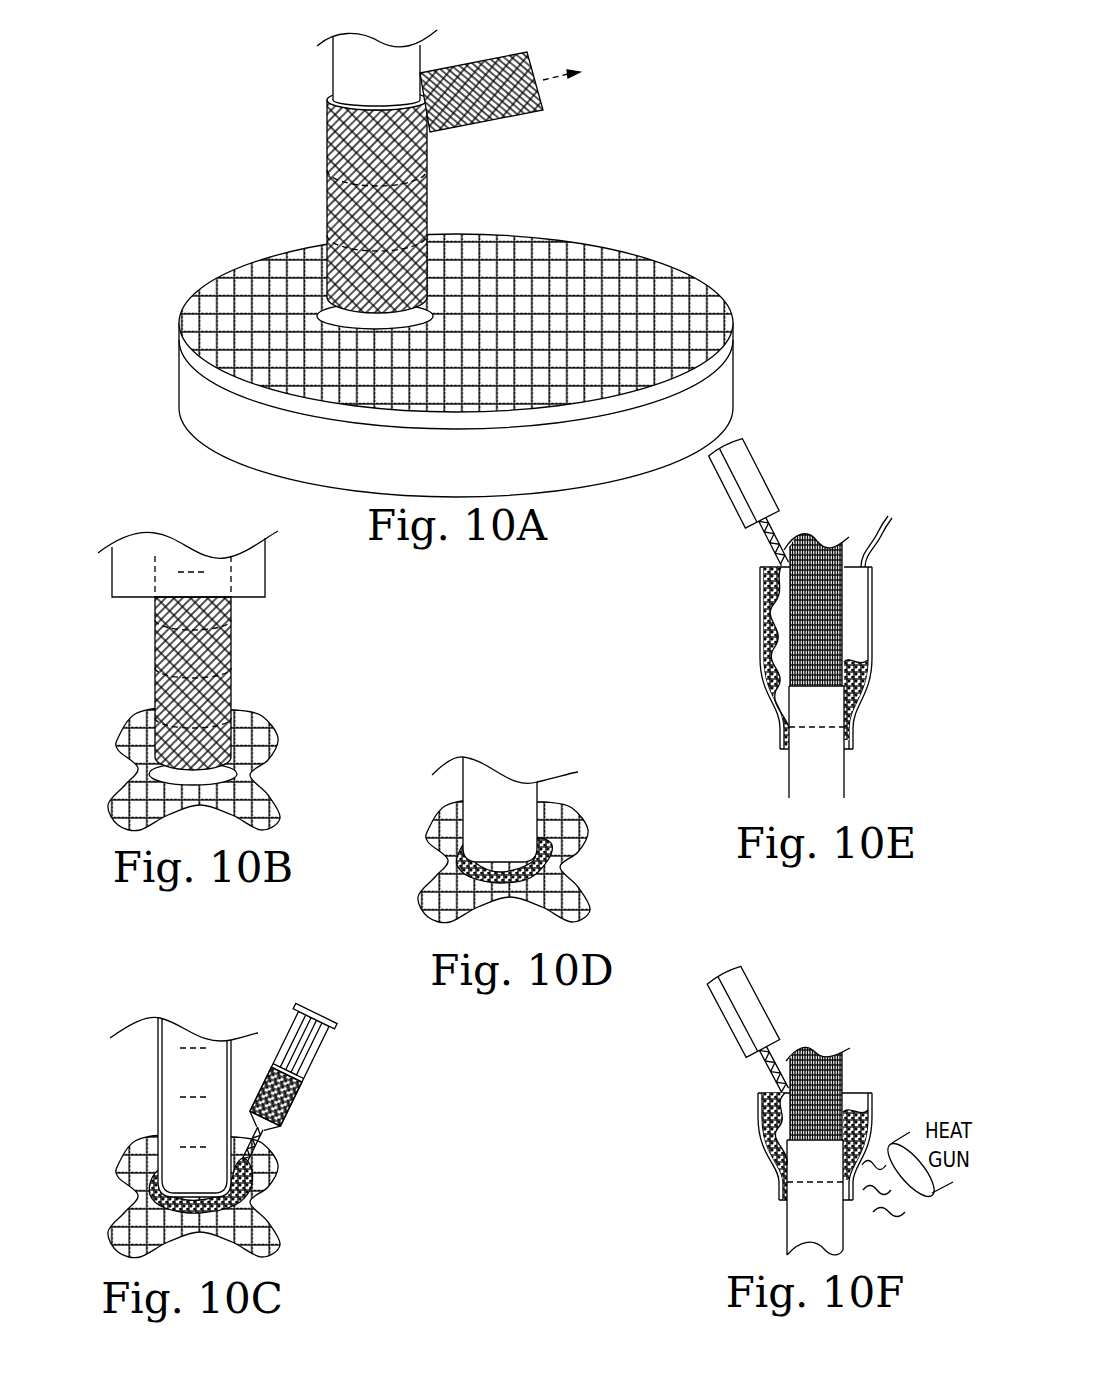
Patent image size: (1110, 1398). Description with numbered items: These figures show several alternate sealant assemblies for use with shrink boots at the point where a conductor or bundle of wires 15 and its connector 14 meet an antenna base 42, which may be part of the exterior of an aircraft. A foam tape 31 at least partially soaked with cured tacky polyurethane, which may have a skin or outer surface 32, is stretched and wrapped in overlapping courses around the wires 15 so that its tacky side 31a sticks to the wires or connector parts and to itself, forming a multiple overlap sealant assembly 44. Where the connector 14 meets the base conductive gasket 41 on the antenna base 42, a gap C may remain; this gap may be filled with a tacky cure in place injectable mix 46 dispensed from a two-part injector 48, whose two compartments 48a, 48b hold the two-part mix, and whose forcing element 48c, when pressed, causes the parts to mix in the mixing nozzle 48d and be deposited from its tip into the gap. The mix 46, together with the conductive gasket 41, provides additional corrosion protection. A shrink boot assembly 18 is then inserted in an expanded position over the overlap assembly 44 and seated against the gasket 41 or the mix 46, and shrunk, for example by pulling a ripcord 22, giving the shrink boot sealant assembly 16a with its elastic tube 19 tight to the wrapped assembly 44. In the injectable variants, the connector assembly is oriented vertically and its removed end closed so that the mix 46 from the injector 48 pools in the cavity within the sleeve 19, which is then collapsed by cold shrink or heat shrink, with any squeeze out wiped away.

In FIG. 10A, the connector 14 is at (428, 298).
In FIG. 10A, the conductor or bundle of wires 15 is at (333, 72).
In FIG. 10B, the conductor or bundle of wires 15 is at (172, 553).
In FIG. 10E, the conductor or bundle of wires 15 is at (843, 547).
In FIG. 10F, the conductor or bundle of wires 15 is at (843, 1070).
In FIG. 10D, the shrink boot sealant assembly 16a is at (565, 793).
In FIG. 10B, the shrink boot assembly 18 is at (110, 572).
In FIG. 10E, the shrink boot assembly 18 is at (883, 650).
In FIG. 10F, the shrink boot assembly 18 is at (878, 1115).
In FIG. 10C, the elastic tube 19 is at (158, 1060).
In FIG. 10D, the elastic tube 19 is at (483, 792).
In FIG. 10E, the elastic tube 19 is at (873, 605).
In FIG. 10F, the elastic tube 19 is at (758, 1113).
In FIG. 10E, the ripcord 22 is at (893, 525).
In FIG. 10A, the foam tape 31 is at (525, 135).
In FIG. 10B, the foam tape 31 is at (132, 689).
In FIG. 10A, the tacky side of tape 31a is at (460, 127).
In FIG. 10A, the skin or outer surface 32 is at (325, 110).
In FIG. 10A, the base conductive gasket 41 is at (652, 256).
In FIG. 10D, the base conductive gasket 41 is at (582, 905).
In FIG. 10A, the antenna base 42 is at (733, 382).
In FIG. 10A, the multiple overlap sealant assembly 44 is at (327, 253).
In FIG. 10B, the multiple overlap sealant assembly 44 is at (232, 685).
In FIG. 10C, the cure in place injectable mix 46 is at (253, 1182).
In FIG. 10D, the cure in place injectable mix 46 is at (540, 865).
In FIG. 10E, the cure in place injectable mix 46 is at (779, 677).
In FIG. 10F, the cure in place injectable mix 46 is at (777, 1133).
In FIG. 10C, the two-part injector 48 is at (311, 1068).
In FIG. 10E, the two-part injector 48 is at (774, 486).
In FIG. 10F, the two-part injector 48 is at (772, 1010).
In FIG. 10C, the compartment 48a is at (287, 1073).
In FIG. 10C, the compartment 48b is at (301, 1045).
In FIG. 10C, the forcing element 48c is at (315, 1016).
In FIG. 10C, the mixing nozzle 48d is at (252, 1144).